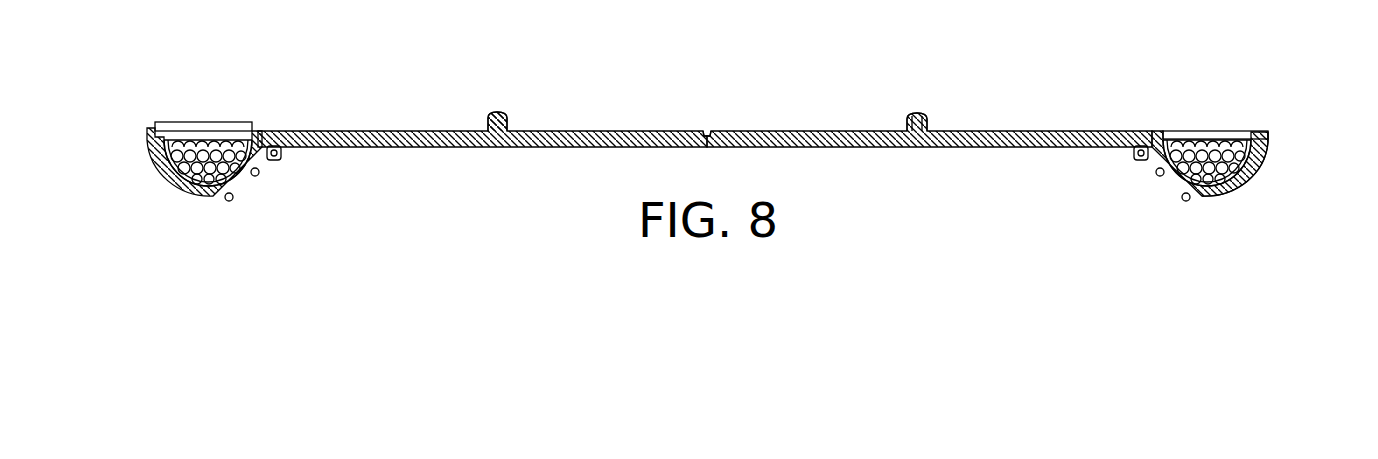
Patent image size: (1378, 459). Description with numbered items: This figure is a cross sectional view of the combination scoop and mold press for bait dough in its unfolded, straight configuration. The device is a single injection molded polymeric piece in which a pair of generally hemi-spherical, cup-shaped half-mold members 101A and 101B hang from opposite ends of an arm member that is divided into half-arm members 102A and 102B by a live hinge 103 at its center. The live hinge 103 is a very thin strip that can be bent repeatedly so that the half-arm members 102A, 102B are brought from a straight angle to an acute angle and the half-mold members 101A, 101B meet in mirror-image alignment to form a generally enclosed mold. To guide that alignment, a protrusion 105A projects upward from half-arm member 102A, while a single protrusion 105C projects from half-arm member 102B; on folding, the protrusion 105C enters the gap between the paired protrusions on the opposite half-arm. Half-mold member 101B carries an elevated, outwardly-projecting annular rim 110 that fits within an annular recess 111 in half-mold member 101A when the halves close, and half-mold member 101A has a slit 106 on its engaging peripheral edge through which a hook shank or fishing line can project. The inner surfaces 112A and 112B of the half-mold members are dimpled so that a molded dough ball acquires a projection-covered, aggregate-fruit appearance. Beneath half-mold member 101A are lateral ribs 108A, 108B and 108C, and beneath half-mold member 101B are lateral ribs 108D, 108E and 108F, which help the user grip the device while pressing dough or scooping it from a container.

The half-mold member 101A is at (1225, 187).
The half-mold member 101B is at (183, 188).
The half-arm member 102A is at (990, 148).
The half-arm member 102B is at (452, 148).
The live hinge 103 is at (707, 132).
The protrusion 105A is at (918, 113).
The protrusion 105C is at (497, 112).
The slit 106 is at (1260, 157).
The lateral rib 108A is at (1184, 200).
The lateral rib 108B is at (1157, 178).
The lateral rib 108C is at (1132, 160).
The lateral rib 108D is at (277, 160).
The lateral rib 108E is at (257, 176).
The lateral rib 108F is at (230, 200).
The annular rim 110 is at (207, 128).
The annular recess 111 is at (1210, 138).
The inner surface 112A is at (1223, 160).
The inner surface 112B is at (188, 157).